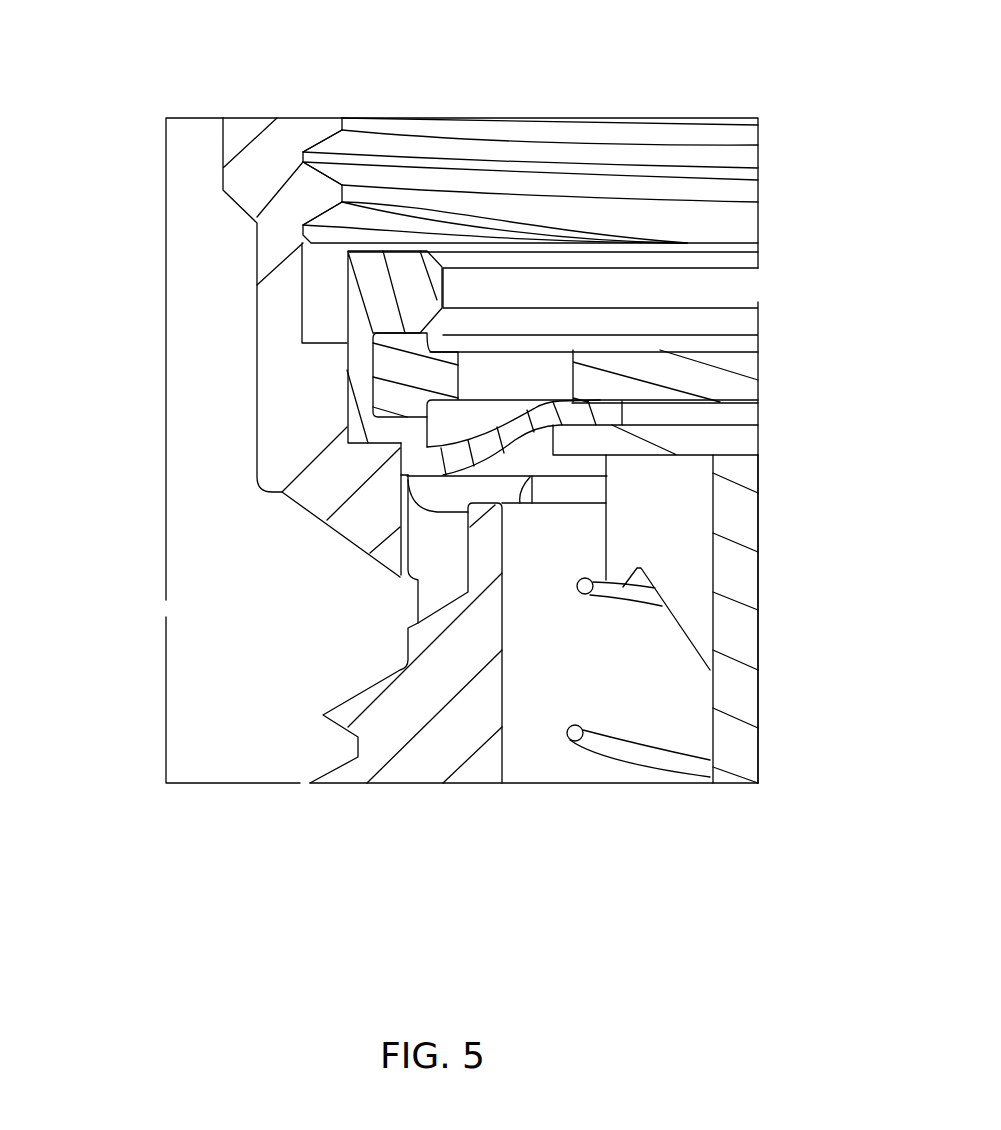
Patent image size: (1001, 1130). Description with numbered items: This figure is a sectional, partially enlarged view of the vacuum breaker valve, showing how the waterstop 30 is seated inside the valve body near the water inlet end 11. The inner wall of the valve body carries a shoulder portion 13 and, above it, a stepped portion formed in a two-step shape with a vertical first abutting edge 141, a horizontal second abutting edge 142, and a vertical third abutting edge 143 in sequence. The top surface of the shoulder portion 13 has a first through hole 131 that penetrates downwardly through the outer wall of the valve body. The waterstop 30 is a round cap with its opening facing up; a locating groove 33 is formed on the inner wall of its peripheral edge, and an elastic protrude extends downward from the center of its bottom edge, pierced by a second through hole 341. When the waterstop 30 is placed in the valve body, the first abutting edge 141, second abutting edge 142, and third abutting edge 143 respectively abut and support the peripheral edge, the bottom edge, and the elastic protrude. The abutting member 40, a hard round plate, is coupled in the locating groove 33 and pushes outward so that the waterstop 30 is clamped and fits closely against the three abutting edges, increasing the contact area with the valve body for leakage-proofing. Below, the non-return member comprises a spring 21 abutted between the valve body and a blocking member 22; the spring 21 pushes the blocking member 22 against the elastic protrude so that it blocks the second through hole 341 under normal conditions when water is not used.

The water inlet end 11 is at (665, 160).
The shoulder portion 13 is at (497, 540).
The spring 21 is at (627, 757).
The blocking member 22 is at (703, 440).
The waterstop 30 is at (404, 252).
The locating groove 33 is at (373, 333).
The abutting member 40 is at (703, 352).
The first through hole 131 is at (400, 530).
The first abutting edge 141 is at (350, 375).
The second abutting edge 142 is at (363, 440).
The third abutting edge 143 is at (282, 492).
The second through hole 341 is at (727, 410).